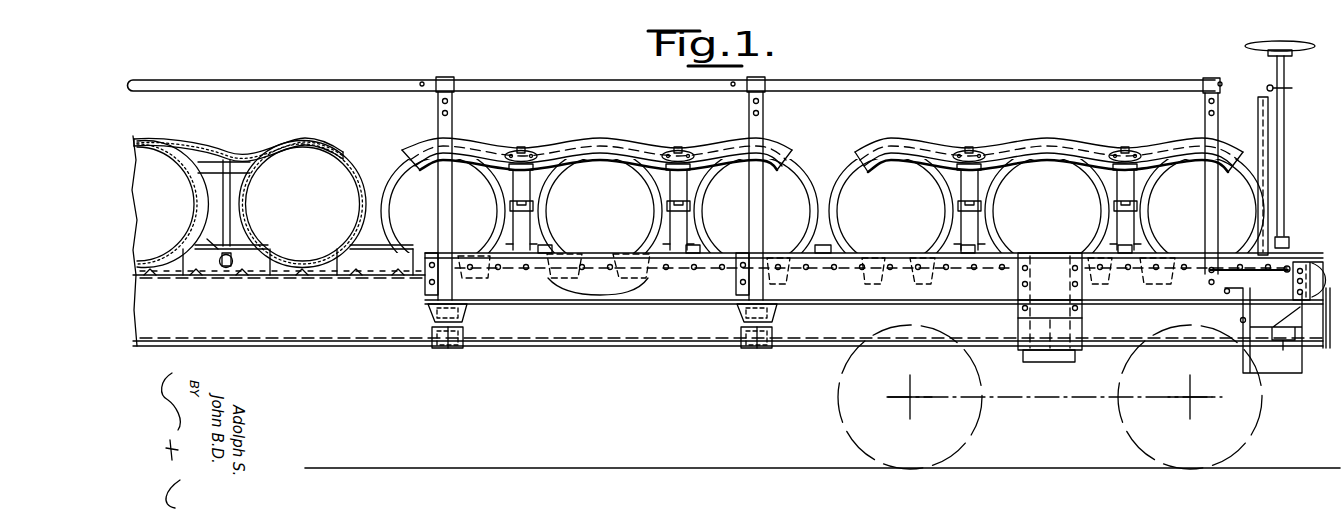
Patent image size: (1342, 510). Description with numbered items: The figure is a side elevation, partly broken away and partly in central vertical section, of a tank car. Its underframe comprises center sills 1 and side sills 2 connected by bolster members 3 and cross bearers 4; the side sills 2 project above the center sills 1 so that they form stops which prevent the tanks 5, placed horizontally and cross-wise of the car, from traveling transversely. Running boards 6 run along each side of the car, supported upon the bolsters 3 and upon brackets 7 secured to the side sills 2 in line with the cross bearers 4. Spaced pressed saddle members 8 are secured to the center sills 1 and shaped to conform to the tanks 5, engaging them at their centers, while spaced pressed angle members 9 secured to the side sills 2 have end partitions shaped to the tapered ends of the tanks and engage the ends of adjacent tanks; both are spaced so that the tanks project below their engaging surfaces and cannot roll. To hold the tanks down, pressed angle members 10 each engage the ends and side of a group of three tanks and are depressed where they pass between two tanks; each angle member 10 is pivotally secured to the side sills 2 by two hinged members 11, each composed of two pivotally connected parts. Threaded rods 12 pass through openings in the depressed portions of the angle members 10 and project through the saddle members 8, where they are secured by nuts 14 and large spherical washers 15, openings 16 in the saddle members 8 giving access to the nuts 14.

The center sills 1 is at (380, 327).
The side sills 2 is at (527, 290).
The bolster members 3 is at (1052, 333).
The cross bearers 4 is at (447, 337).
The tanks 5 is at (700, 207).
The running boards 6 is at (887, 256).
The brackets 7 is at (450, 293).
The saddle members 8 is at (245, 254).
The angle members 9 is at (562, 265).
The angle members 10 is at (238, 150).
The hinged members 11 is at (520, 200).
The threaded rods 12 is at (230, 192).
The nuts 14 is at (221, 268).
The spherical washers 15 is at (233, 261).
The openings 16 is at (219, 247).